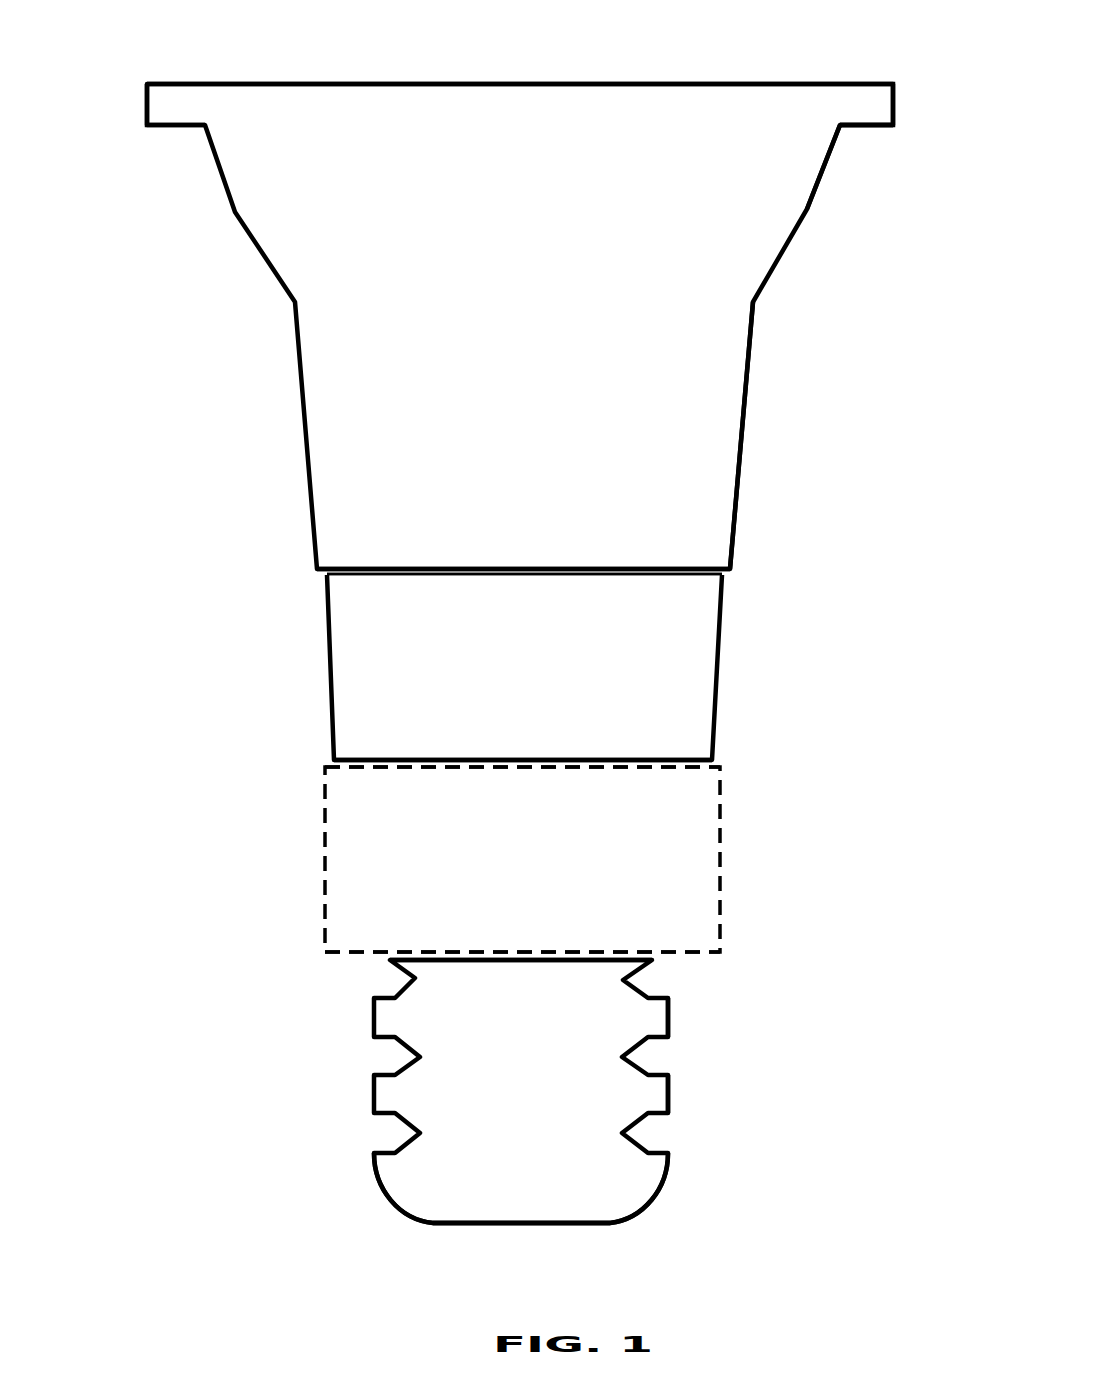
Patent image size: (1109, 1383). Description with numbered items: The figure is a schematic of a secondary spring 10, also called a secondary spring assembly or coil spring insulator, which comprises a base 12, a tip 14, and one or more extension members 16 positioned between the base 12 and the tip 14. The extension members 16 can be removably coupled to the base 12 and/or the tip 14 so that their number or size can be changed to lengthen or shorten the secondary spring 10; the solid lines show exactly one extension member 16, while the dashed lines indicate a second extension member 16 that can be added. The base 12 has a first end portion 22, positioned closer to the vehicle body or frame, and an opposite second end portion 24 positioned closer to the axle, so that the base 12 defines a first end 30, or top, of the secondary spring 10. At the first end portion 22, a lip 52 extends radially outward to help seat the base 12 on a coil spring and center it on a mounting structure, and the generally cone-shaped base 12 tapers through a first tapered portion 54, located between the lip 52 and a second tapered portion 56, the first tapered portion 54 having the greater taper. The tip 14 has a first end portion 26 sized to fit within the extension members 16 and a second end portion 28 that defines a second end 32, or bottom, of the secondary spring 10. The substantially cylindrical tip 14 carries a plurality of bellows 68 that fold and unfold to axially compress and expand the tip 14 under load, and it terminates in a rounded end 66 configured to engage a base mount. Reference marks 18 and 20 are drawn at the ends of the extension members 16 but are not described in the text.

The secondary spring 10 is at (528, 645).
The base 12 is at (745, 415).
The tip 14 is at (622, 1057).
The extension member 16 is at (611, 763).
The section upper end 18 is at (327, 580).
The section lower end 20 is at (333, 752).
The first end portion 22 is at (147, 105).
The second end portion 24 is at (317, 551).
The first end portion 26 is at (390, 960).
The second end portion 28 is at (395, 1210).
The first end 30 is at (528, 292).
The second end 32 is at (648, 1122).
The lip 52 is at (865, 125).
The first tapered portion 54 is at (807, 209).
The second tapered portion 56 is at (752, 352).
The rounded end 66 is at (645, 1208).
The bellows 68 is at (668, 1010).